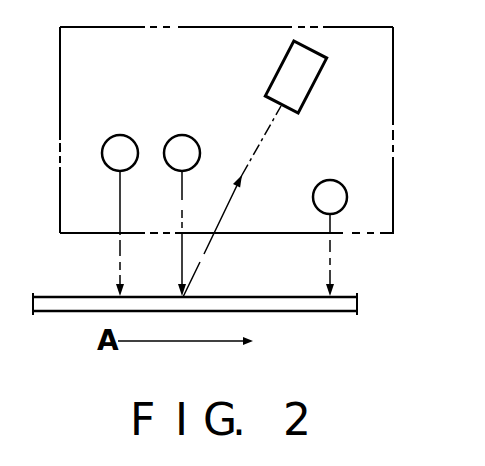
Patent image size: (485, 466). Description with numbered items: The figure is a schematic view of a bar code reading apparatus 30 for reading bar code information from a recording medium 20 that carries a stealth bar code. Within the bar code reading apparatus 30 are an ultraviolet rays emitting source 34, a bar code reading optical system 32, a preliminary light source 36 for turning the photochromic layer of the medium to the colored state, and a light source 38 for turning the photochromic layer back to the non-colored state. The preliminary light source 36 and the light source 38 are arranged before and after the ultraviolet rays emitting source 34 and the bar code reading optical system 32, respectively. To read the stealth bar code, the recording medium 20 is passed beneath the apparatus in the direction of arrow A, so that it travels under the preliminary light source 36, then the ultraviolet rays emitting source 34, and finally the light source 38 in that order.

The recording medium 20 is at (338, 308).
The bar code reading apparatus 30 is at (394, 105).
The bar code reading optical system 32 is at (278, 84).
The ultraviolet rays emitting source 34 is at (188, 136).
The preliminary light source 36 is at (115, 136).
The light source 38 is at (336, 181).